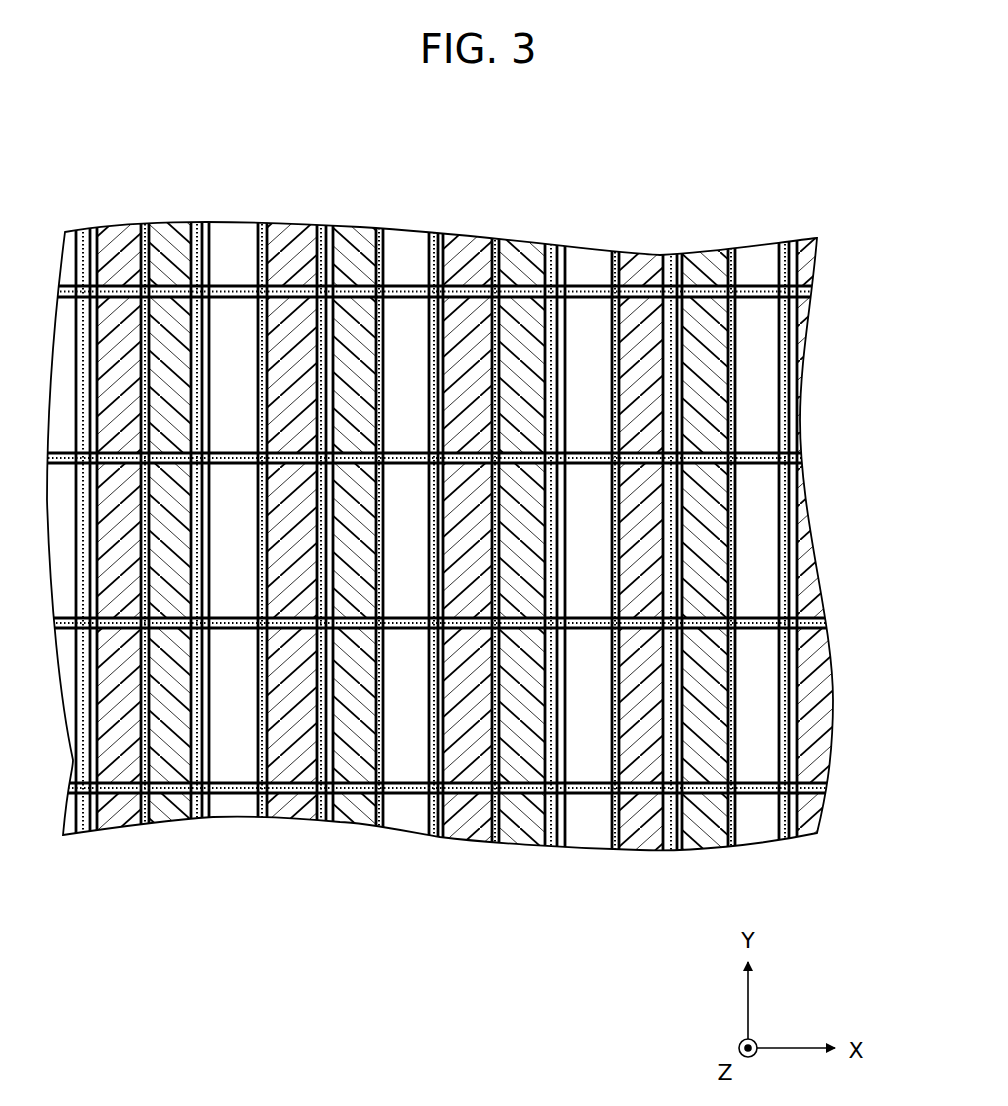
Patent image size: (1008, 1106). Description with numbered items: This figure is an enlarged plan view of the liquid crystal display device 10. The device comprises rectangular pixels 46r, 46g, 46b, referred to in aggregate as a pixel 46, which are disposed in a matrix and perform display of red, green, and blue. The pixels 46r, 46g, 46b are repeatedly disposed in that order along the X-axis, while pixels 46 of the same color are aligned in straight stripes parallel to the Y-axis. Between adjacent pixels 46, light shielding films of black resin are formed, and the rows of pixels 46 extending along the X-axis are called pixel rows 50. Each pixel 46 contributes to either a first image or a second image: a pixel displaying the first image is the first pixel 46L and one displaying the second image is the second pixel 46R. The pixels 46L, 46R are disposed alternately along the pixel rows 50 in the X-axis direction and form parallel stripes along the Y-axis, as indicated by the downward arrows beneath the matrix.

The liquid crystal display device 10 is at (776, 147).
The pixel 46 is at (232, 478).
The red pixel 46r is at (170, 245).
The green pixel 46g is at (228, 245).
The blue pixel 46b is at (299, 504).
The first pixel 46L is at (352, 883).
The second pixel 46R is at (404, 883).
The pixel row 50 is at (842, 295).